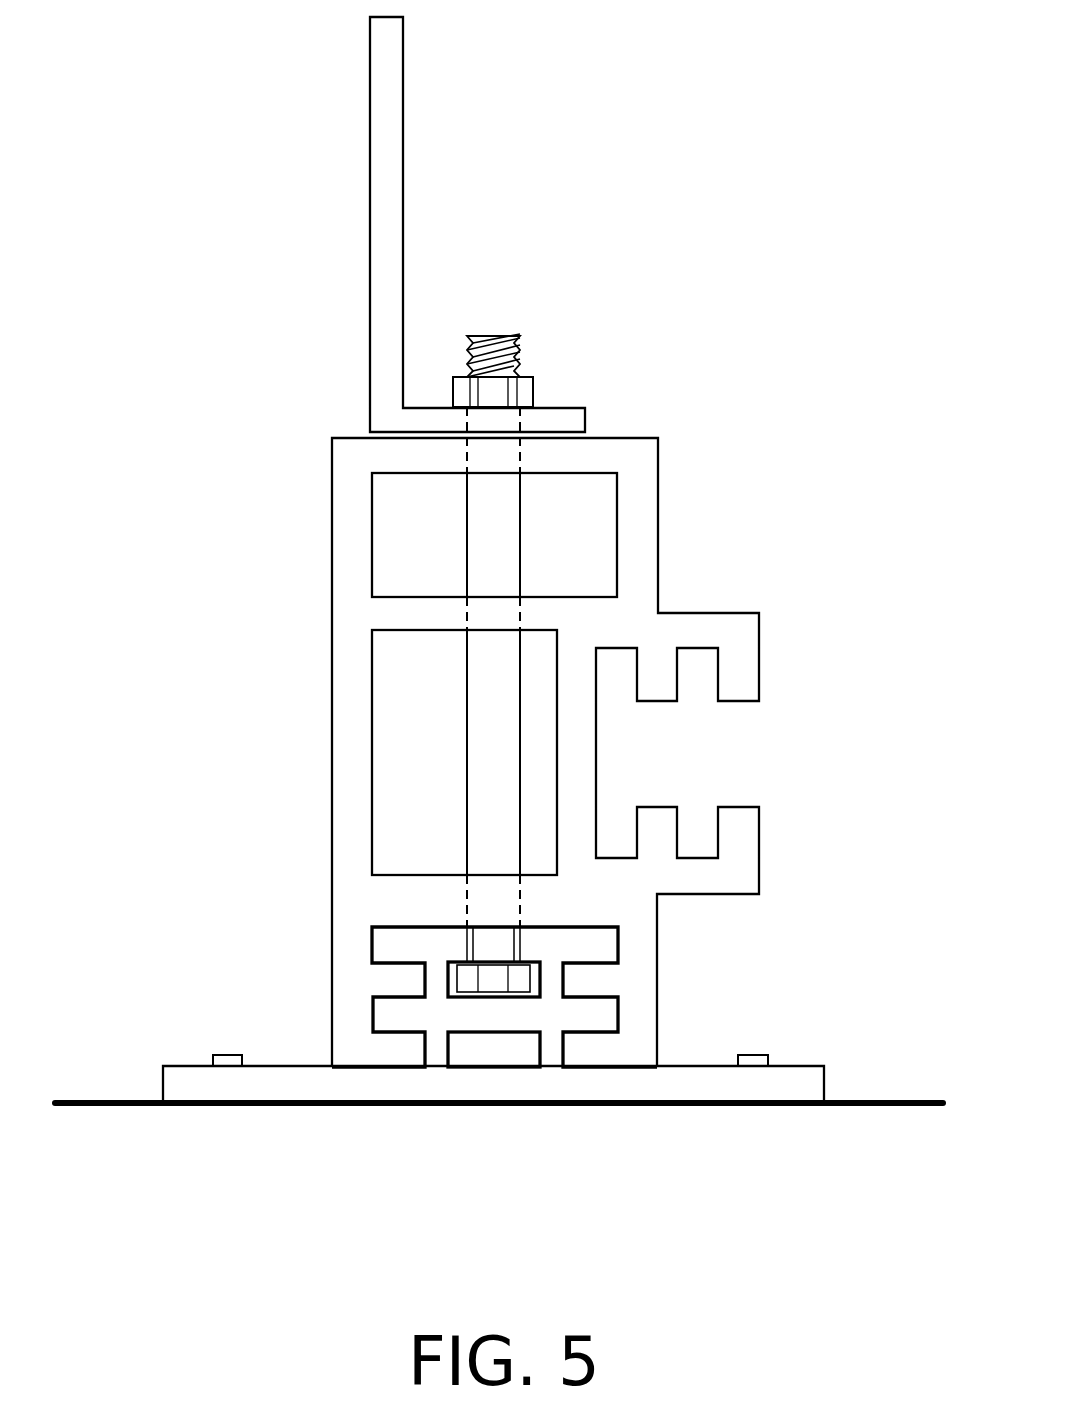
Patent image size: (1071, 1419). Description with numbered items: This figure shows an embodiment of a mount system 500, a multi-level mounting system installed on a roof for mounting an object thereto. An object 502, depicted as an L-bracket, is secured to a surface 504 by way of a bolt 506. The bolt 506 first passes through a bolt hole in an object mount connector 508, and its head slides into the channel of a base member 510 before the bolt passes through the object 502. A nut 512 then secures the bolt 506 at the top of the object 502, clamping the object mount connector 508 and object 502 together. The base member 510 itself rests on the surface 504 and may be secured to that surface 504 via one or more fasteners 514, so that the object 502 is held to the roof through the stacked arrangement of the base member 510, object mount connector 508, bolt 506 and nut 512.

The mount system 500 is at (706, 186).
The object 502 is at (370, 310).
The surface 504 is at (142, 1100).
The bolt 506 is at (525, 980).
The object mount connector 508 is at (659, 570).
The base member 510 is at (697, 1066).
The nut 512 is at (533, 388).
The fasteners 514 is at (225, 1055).